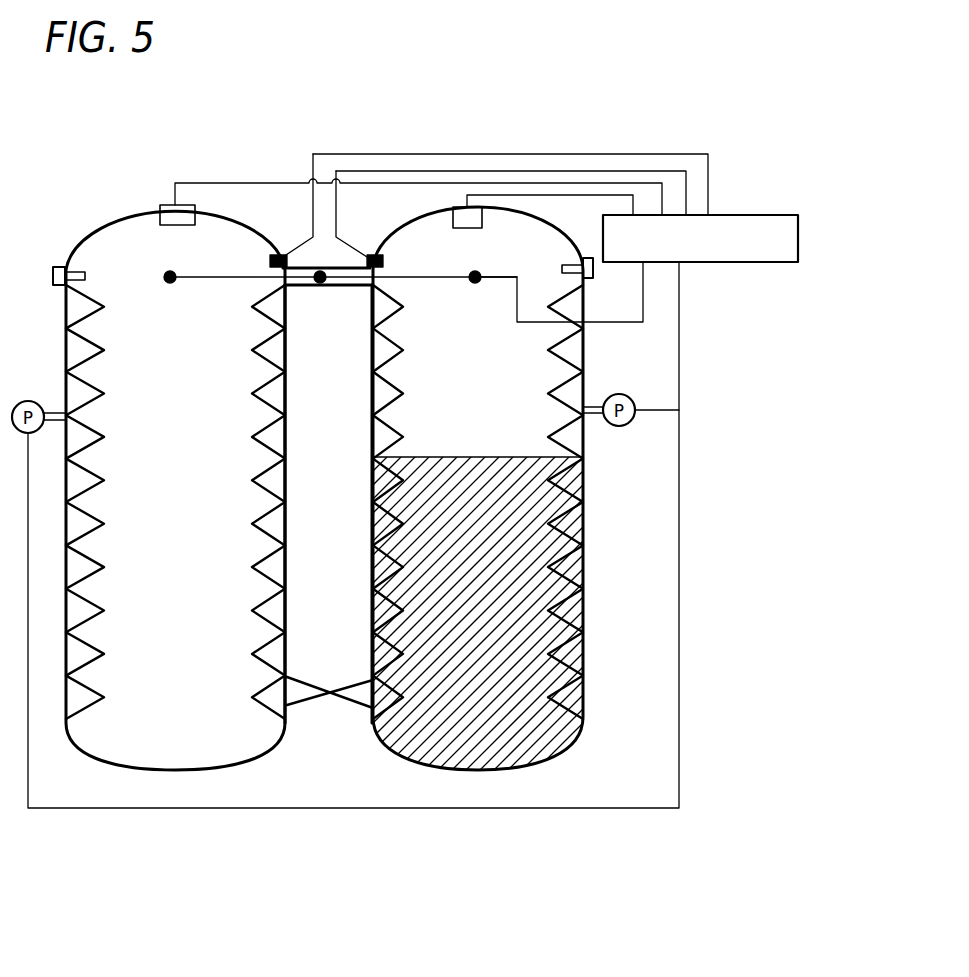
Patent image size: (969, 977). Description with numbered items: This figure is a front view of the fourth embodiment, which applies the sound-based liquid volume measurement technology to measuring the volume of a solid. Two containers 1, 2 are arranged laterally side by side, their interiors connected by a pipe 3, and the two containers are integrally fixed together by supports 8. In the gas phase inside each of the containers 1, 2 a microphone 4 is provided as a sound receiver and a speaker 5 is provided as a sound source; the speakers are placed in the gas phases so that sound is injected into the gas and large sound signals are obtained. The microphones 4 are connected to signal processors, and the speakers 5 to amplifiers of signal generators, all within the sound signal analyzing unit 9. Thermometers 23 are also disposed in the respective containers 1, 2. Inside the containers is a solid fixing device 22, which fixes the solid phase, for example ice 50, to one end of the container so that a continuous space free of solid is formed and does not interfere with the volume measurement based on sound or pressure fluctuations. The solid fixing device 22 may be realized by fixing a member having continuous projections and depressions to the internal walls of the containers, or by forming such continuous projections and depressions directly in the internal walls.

The container 1 is at (100, 218).
The container 2 is at (585, 530).
The pipe 3 is at (320, 284).
The microphone 4 is at (270, 258).
The speaker 5 is at (172, 208).
The support 8 is at (343, 697).
The sound signal analyzing unit 9 is at (798, 222).
The solid fixing device 22 is at (567, 433).
The thermometer 23 is at (170, 284).
The ice 50 is at (498, 752).